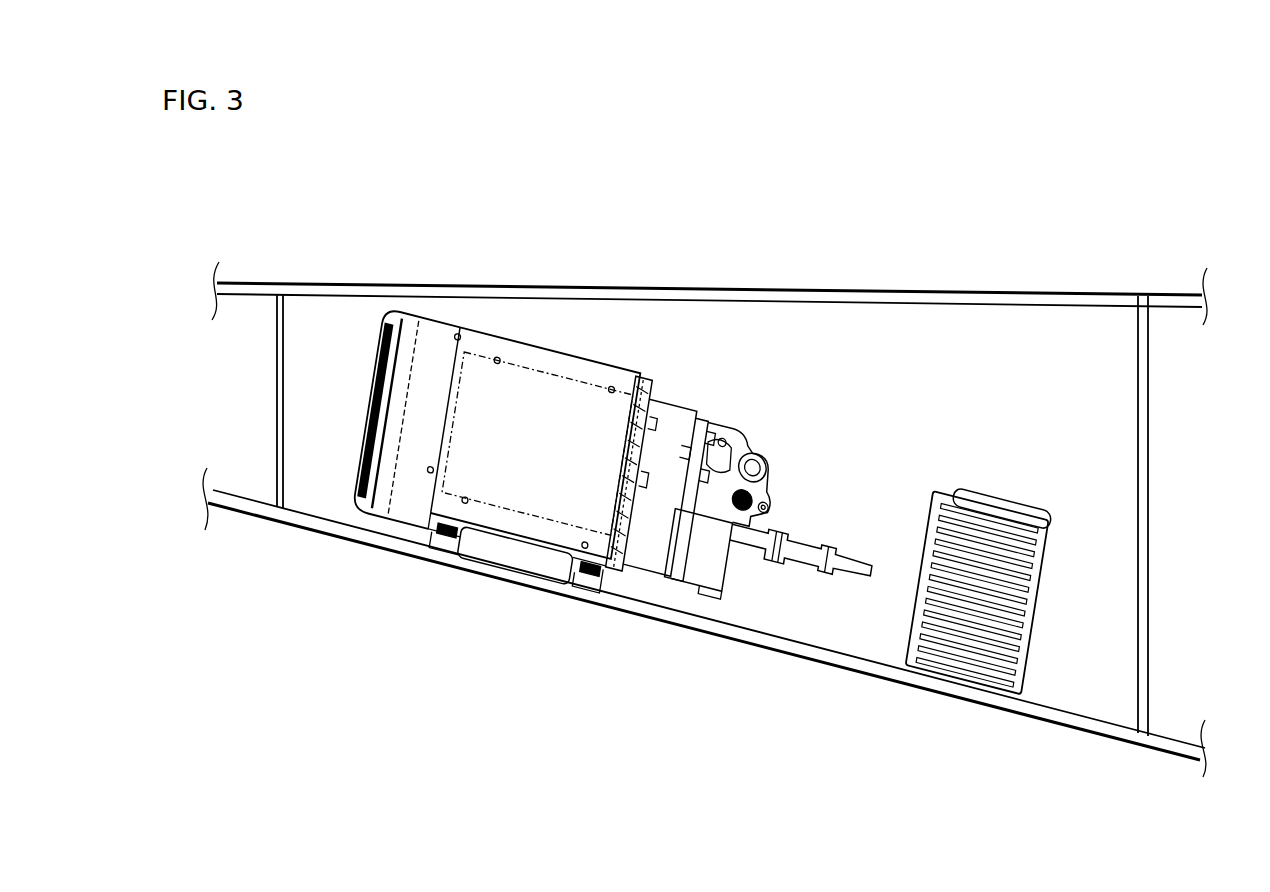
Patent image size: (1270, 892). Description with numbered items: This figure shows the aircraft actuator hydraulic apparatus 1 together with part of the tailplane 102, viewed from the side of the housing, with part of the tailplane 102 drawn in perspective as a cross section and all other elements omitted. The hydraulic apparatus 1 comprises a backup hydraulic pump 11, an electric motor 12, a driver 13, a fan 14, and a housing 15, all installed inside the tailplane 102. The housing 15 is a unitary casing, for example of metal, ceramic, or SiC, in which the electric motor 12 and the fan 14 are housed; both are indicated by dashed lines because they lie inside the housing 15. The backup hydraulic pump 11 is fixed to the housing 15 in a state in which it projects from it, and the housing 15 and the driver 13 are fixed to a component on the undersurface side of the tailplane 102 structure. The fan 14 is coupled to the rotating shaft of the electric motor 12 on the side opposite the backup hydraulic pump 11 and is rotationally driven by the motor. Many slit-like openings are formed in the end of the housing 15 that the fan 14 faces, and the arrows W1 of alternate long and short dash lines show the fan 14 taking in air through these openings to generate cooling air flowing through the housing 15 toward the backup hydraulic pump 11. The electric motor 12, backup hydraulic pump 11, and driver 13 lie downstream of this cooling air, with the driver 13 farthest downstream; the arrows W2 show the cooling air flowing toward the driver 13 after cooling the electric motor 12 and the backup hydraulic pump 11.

The hydraulic apparatus 1 is at (760, 427).
The backup hydraulic pump 11 is at (705, 500).
The electric motor 12 is at (528, 358).
The driver 13 is at (1020, 527).
The fan 14 is at (428, 312).
The housing 15 is at (584, 358).
The tailplane 102 is at (1024, 280).
The arrows indicating air intake W1 is at (352, 362).
The arrows indicating cooling air flow toward the driver W2 is at (902, 502).